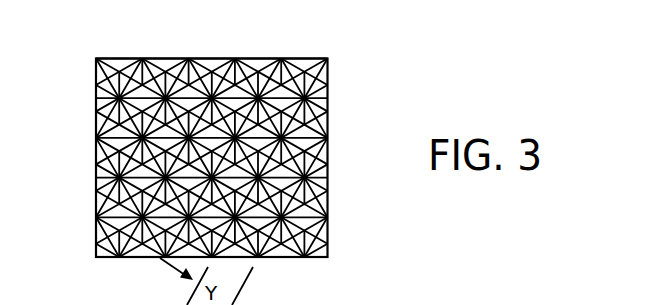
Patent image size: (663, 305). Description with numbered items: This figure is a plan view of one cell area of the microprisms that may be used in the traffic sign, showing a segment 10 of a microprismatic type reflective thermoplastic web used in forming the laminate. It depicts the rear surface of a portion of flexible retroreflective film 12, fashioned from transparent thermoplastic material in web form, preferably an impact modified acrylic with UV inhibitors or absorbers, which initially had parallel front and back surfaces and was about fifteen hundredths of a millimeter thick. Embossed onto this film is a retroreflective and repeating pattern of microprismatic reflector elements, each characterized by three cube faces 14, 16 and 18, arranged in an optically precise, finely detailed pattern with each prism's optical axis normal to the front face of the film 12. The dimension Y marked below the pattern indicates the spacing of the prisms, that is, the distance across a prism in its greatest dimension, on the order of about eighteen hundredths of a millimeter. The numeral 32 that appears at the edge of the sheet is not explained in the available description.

The segment of microprismatic reflective thermoplastic web 10 is at (221, 173).
The flexible retroreflective film 12 is at (326, 70).
The cube face 14 is at (302, 222).
The cube face 16 is at (304, 235).
The cube face 18 is at (304, 223).
The section line 32 is at (562, 295).